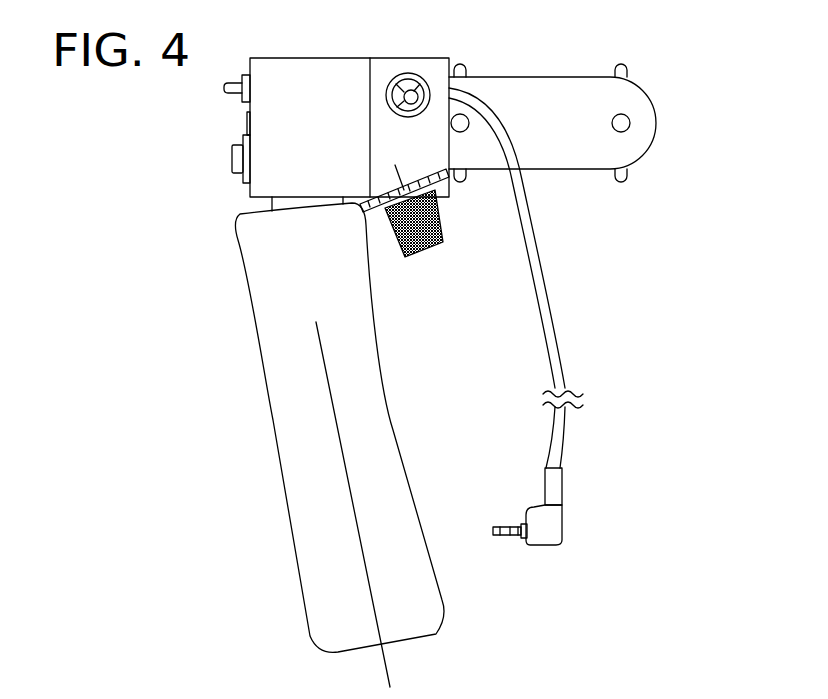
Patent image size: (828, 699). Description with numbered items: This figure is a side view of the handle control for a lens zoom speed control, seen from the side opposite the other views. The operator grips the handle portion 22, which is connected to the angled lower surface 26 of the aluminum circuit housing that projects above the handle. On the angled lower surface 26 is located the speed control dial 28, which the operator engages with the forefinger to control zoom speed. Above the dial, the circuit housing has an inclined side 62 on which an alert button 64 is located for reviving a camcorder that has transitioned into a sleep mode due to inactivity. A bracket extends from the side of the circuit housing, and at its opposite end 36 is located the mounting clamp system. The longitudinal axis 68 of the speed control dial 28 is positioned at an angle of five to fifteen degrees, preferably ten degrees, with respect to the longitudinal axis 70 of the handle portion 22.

The handle portion 22 is at (305, 473).
The angled lower surface 26 is at (455, 180).
The speed control dial 28 is at (397, 245).
The opposite end of bracket 36 is at (640, 100).
The inclined side 62 is at (436, 65).
The alert button 64 is at (409, 80).
The longitudinal axis of speed control dial 68 is at (430, 250).
The longitudinal axis of handle 70 is at (387, 665).